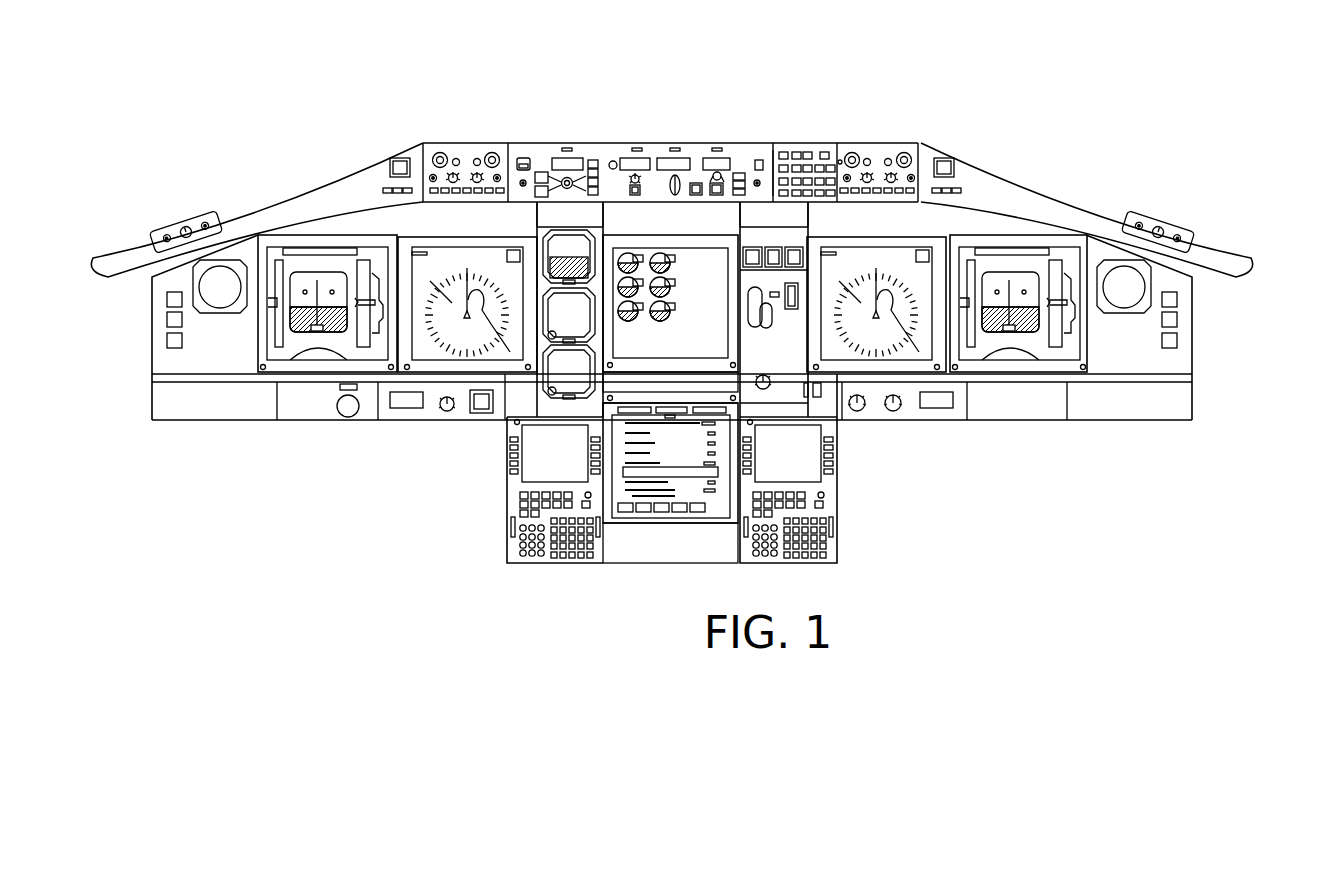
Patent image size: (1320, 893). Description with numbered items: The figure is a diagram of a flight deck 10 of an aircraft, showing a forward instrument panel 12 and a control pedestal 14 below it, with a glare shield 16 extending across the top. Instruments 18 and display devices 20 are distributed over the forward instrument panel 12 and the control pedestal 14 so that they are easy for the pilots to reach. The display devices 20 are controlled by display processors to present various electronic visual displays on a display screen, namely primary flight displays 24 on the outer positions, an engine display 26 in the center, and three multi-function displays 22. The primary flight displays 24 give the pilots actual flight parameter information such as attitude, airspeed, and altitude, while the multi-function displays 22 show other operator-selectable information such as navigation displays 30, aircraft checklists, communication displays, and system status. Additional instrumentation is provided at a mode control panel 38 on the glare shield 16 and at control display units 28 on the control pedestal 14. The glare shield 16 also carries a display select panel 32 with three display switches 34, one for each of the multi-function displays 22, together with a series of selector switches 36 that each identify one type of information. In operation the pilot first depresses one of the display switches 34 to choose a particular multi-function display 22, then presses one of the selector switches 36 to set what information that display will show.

The flight deck 10 is at (1198, 92).
The forward instrument panel 12 is at (1187, 327).
The control pedestal 14 is at (857, 558).
The glare shield 16 is at (1047, 165).
The instruments 18 is at (1025, 458).
The display devices 20 is at (295, 235).
The multi-function displays 22 is at (450, 300).
The primary flight displays 24 is at (283, 360).
The engine display 26 is at (692, 268).
The control display units 28 is at (507, 450).
The navigation displays 30 is at (477, 245).
The display select panel 32 is at (840, 158).
The display switches 34 is at (807, 158).
The selector switches 36 is at (773, 187).
The mode control panel 38 is at (542, 148).